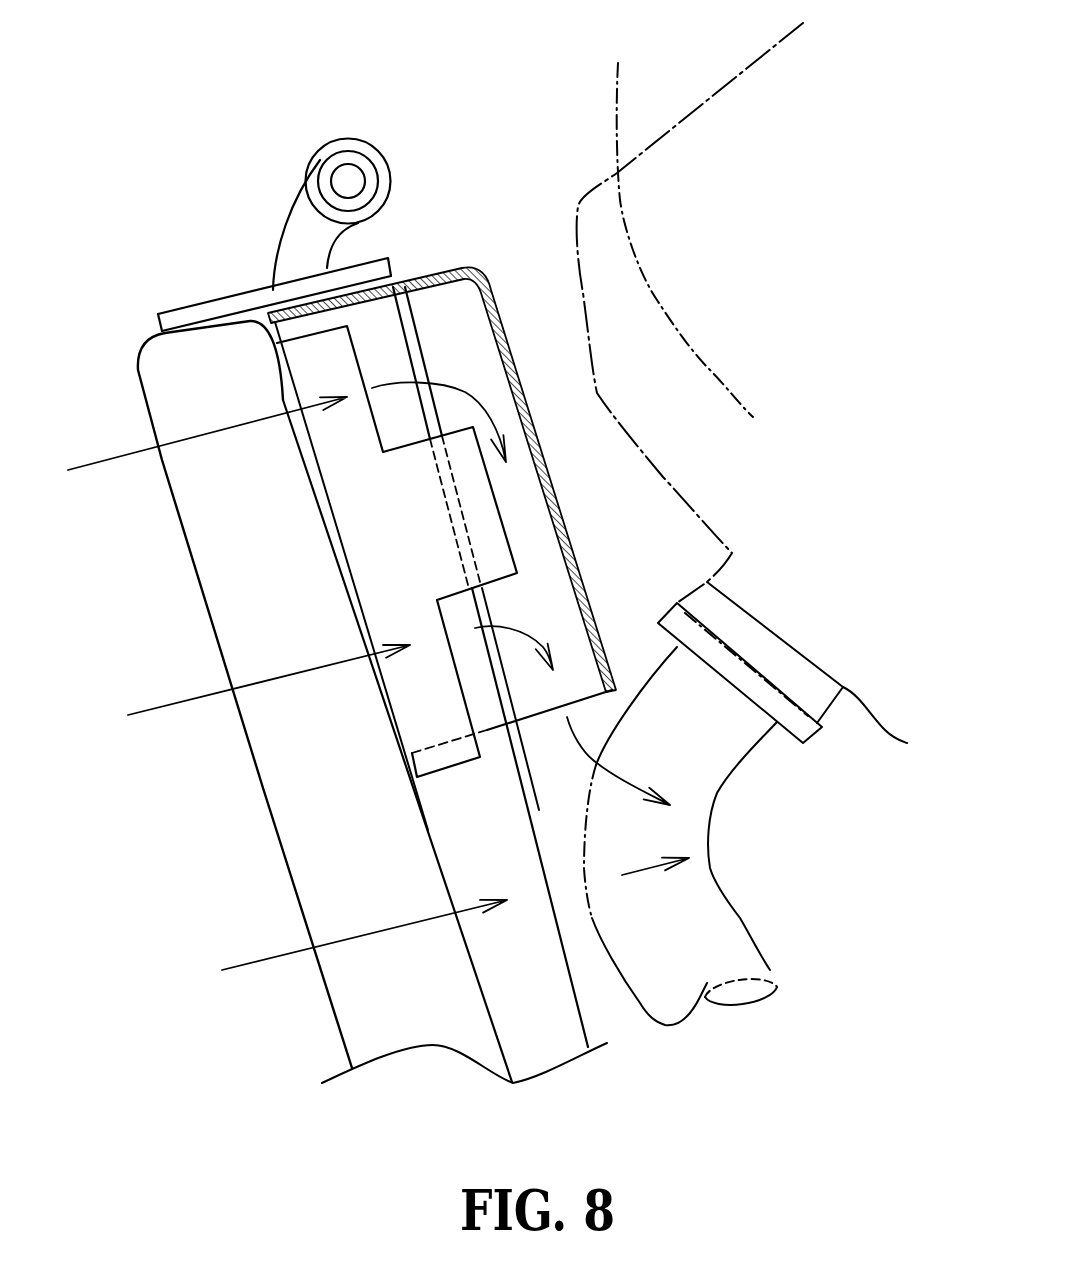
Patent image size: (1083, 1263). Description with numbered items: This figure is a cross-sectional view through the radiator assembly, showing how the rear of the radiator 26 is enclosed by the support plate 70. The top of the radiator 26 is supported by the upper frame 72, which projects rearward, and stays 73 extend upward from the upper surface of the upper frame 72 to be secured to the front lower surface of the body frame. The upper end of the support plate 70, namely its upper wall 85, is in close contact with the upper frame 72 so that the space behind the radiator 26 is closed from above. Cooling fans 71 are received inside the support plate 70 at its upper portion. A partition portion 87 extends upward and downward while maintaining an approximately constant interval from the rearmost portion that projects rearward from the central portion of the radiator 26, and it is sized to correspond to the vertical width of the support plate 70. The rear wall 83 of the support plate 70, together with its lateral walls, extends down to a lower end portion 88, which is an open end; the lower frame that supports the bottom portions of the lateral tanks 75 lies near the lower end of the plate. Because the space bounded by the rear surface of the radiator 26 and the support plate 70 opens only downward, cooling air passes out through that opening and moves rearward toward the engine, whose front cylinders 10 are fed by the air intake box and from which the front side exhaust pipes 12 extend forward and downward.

The front cylinders 10 is at (690, 313).
The front side exhaust pipes 12 is at (730, 940).
The radiator 26 is at (149, 527).
The support plate 70 is at (521, 215).
The cooling fans 71 is at (437, 530).
The upper frame 72 is at (207, 310).
The stays 73 is at (300, 223).
The lateral tanks 75 is at (288, 795).
The rear wall 83 is at (493, 325).
The upper wall 85 is at (428, 268).
The partition portion 87 is at (542, 590).
The lower end portion 88 is at (522, 713).